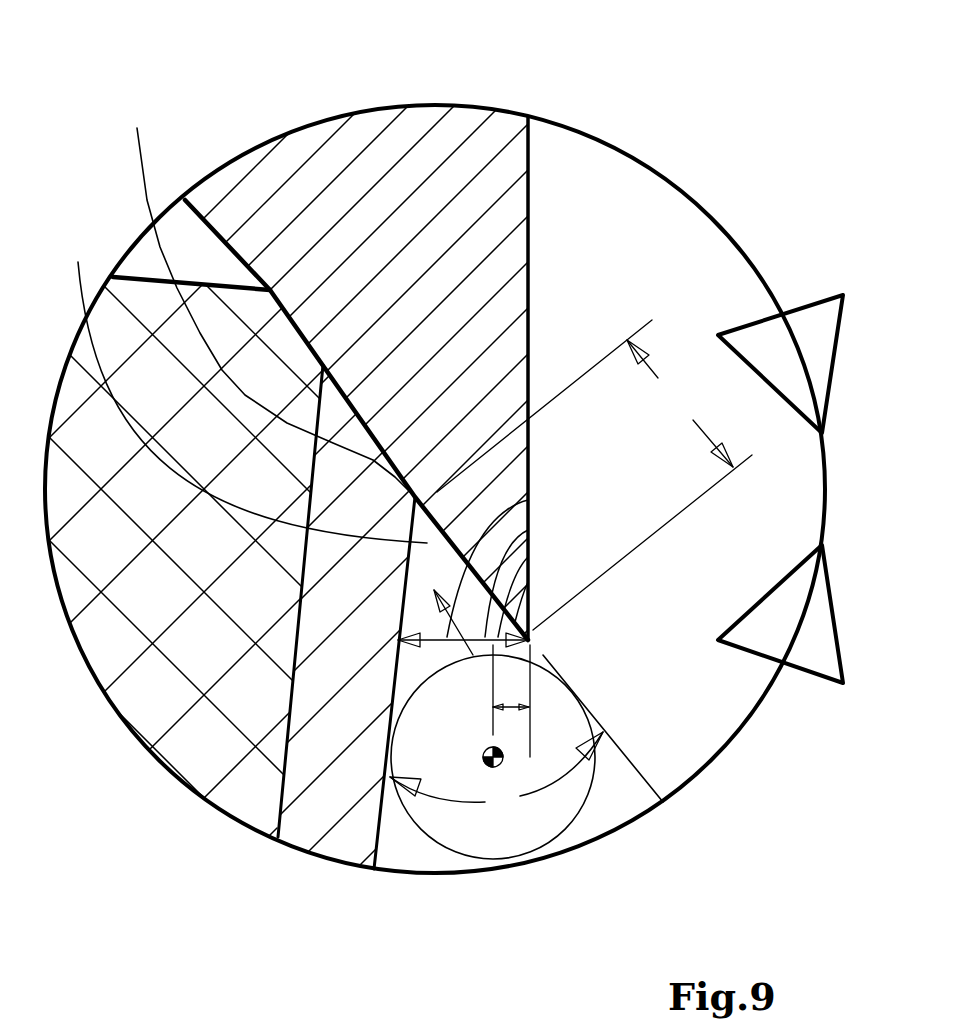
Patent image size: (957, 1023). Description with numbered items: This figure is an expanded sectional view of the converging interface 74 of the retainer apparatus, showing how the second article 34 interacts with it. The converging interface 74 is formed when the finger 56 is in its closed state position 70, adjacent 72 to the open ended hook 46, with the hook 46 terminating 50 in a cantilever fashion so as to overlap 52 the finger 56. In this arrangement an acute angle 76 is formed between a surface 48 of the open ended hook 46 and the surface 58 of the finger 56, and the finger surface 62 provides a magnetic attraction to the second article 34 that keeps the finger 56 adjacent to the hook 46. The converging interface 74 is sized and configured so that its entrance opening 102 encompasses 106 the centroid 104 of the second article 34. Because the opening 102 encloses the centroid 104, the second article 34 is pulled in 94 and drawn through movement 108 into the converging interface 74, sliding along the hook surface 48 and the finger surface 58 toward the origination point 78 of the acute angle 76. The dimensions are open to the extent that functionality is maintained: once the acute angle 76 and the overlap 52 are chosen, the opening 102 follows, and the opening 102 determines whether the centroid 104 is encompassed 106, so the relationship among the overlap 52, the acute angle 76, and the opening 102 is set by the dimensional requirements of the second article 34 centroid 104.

The second article 34 is at (567, 833).
The open ended hook 46 is at (432, 147).
The surface of the open ended hook 48 is at (457, 558).
The terminating 50 is at (530, 640).
The overlap 52 is at (594, 475).
The finger 56 is at (228, 750).
The surface of the finger 58 is at (380, 847).
The surface 62 is at (280, 783).
The closed state position 70 is at (266, 299).
The adjacent 72 is at (147, 200).
The converging interface 74 is at (243, 389).
The acute angle 76 is at (496, 772).
The origination point 78 is at (335, 158).
The pulled in 94 is at (533, 497).
The entrance opening 102 is at (537, 552).
The centroid 104 is at (493, 757).
The encompasses 106 is at (513, 704).
The movement 108 is at (540, 500).